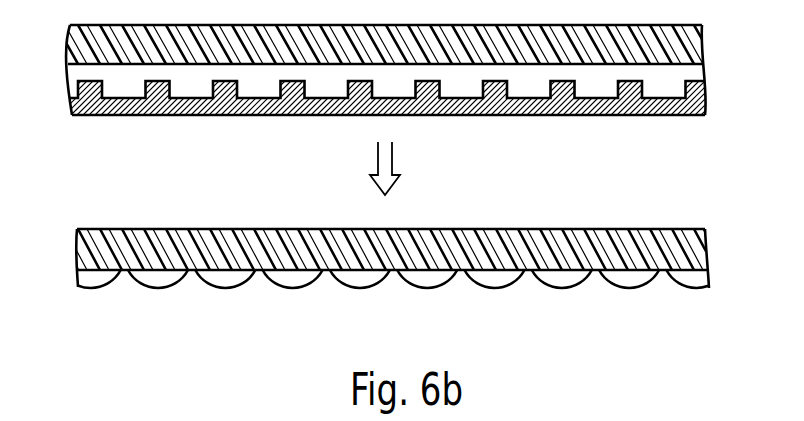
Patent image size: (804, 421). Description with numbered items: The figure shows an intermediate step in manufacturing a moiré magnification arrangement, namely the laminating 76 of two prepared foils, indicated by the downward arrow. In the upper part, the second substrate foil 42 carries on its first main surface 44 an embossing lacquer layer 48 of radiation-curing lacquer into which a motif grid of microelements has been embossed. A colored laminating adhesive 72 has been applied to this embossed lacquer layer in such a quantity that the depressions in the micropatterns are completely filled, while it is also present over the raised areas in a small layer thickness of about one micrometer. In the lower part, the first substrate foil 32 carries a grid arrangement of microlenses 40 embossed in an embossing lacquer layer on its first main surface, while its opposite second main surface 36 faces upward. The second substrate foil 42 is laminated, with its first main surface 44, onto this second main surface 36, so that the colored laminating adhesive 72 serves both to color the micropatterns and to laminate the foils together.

The second substrate foil 42 is at (690, 33).
The embossing lacquer layer 48 is at (688, 72).
The colored laminating adhesive 72 is at (692, 96).
The first main surface 44 is at (463, 117).
The laminating 76 is at (377, 160).
The second main surface 36 is at (557, 222).
The first substrate foil 32 is at (687, 250).
The microlenses 40 is at (695, 277).